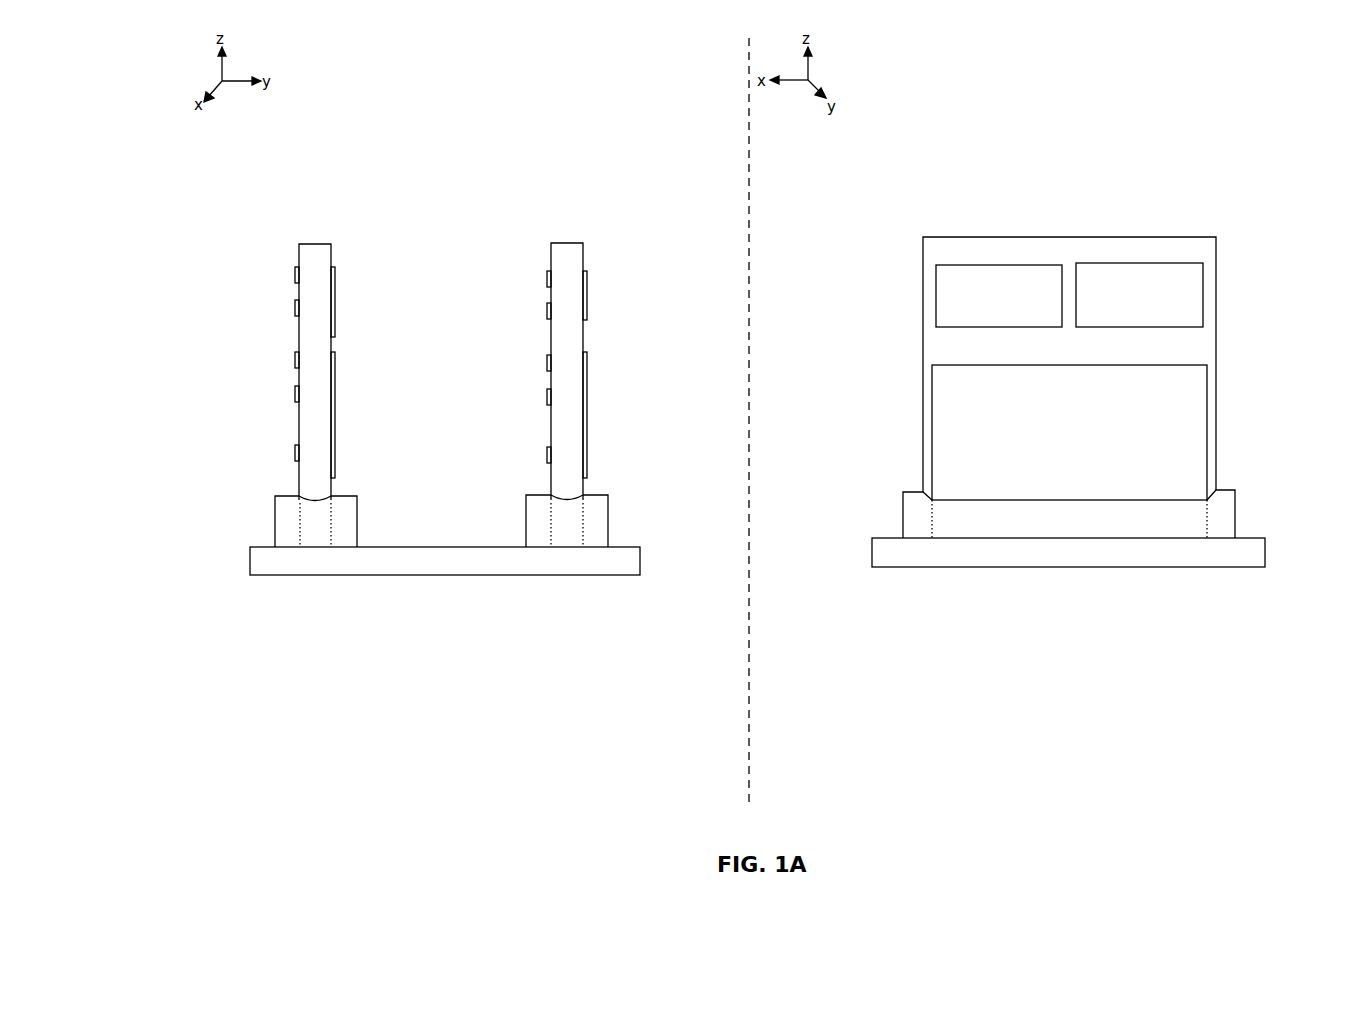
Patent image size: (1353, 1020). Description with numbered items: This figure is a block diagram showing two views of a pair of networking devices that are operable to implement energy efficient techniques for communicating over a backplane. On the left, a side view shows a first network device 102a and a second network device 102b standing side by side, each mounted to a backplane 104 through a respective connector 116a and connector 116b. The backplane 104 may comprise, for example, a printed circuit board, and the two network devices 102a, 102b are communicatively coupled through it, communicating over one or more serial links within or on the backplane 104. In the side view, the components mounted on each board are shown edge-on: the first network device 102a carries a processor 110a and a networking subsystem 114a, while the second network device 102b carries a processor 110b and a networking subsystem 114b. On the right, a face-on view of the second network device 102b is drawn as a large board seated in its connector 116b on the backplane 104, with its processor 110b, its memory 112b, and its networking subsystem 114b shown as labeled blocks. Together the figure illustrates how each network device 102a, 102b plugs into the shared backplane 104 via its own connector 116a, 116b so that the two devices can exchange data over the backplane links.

The network device 102a is at (318, 244).
The network device 102b is at (567, 243).
The backplane 104 is at (757, 556).
The processor 110a is at (336, 306).
The processor 110b is at (588, 306).
The memory 112b is at (1139, 295).
The networking subsystem 114a is at (336, 431).
The networking subsystem 114b is at (588, 423).
The connector 116a is at (358, 517).
The connector 116b is at (609, 517).